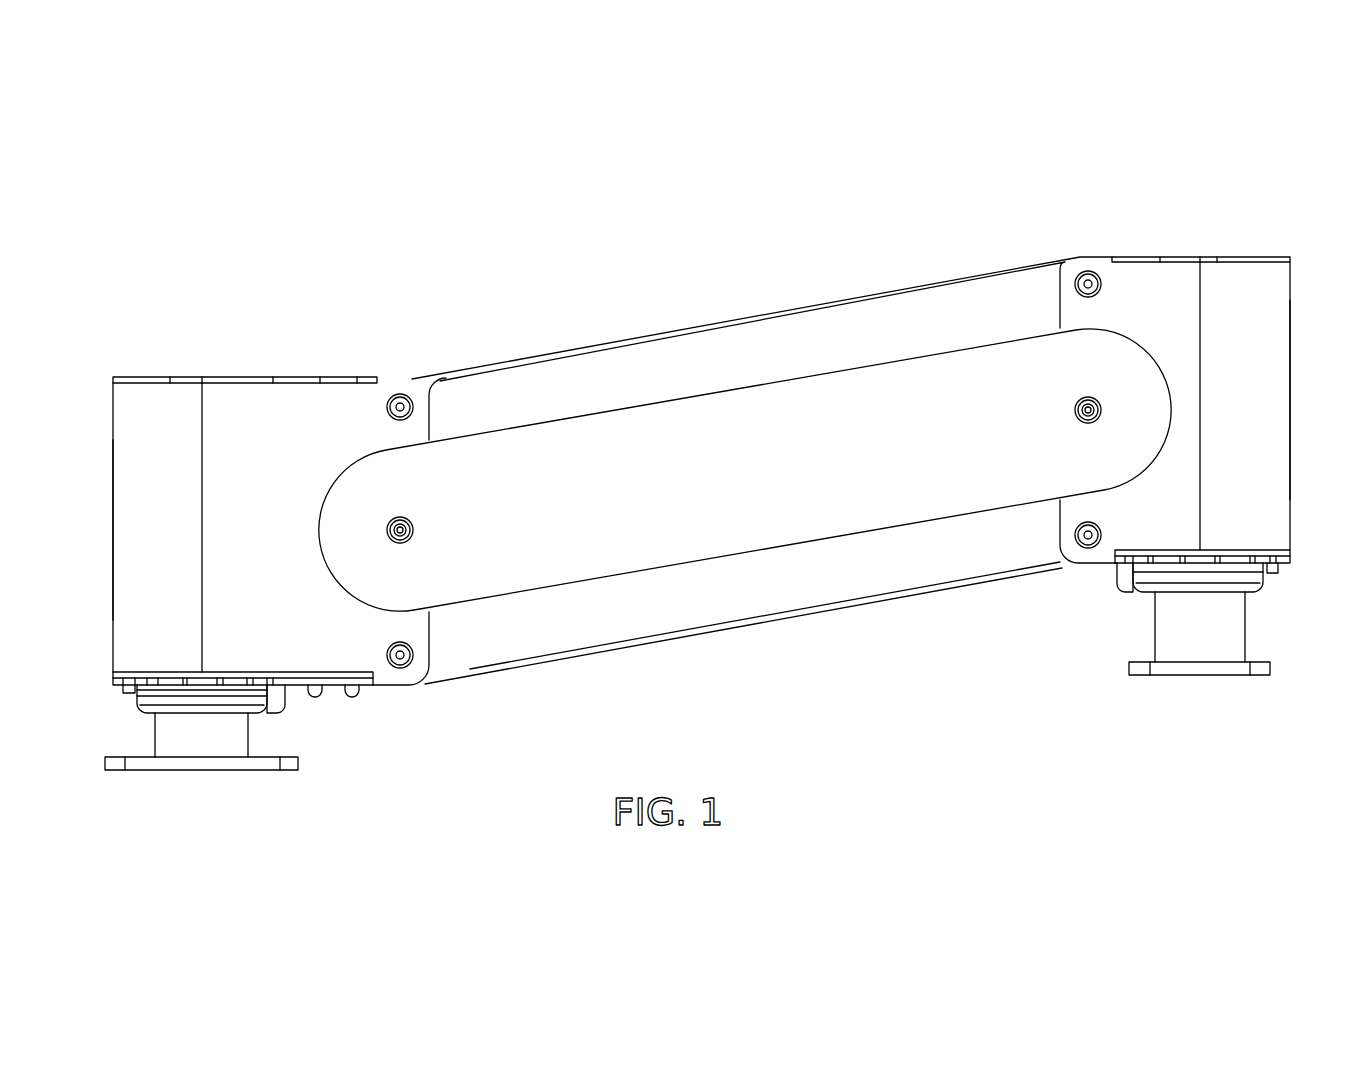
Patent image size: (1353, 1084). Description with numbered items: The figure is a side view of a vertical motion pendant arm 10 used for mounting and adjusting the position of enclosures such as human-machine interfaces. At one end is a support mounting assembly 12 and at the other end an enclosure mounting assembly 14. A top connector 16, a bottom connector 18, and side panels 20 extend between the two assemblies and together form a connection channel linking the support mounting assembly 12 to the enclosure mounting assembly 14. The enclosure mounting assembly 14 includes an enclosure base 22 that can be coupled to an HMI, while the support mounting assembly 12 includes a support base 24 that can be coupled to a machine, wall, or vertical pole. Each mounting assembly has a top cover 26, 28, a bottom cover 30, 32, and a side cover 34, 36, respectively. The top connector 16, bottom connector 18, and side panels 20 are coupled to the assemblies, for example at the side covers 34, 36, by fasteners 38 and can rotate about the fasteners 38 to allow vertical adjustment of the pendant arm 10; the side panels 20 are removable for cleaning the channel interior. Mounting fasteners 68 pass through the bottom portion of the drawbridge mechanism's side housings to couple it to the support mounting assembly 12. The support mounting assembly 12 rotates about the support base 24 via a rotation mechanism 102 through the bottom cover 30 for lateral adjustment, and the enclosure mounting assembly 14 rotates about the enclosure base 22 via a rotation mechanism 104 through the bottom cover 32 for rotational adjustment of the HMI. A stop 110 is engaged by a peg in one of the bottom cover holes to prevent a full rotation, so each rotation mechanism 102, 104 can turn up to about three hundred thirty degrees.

The vertical motion pendant arm 10 is at (689, 230).
The support mounting assembly 12 is at (101, 364).
The enclosure mounting assembly 14 is at (1208, 203).
The top connector 16 is at (862, 325).
The bottom connector 18 is at (738, 606).
The side panels 20 is at (618, 437).
The enclosure base 22 is at (1260, 676).
The support base 24 is at (113, 766).
The top cover 26 is at (305, 377).
The top cover 28 is at (1262, 257).
The bottom cover 30 is at (112, 683).
The bottom cover 32 is at (1285, 563).
The side cover 34 is at (130, 478).
The side cover 36 is at (1263, 357).
The fasteners 38 is at (404, 394).
The mounting fasteners 68 is at (312, 691).
The rotation mechanism 102 is at (197, 706).
The rotation mechanism 104 is at (1200, 583).
The stop 110 is at (277, 703).